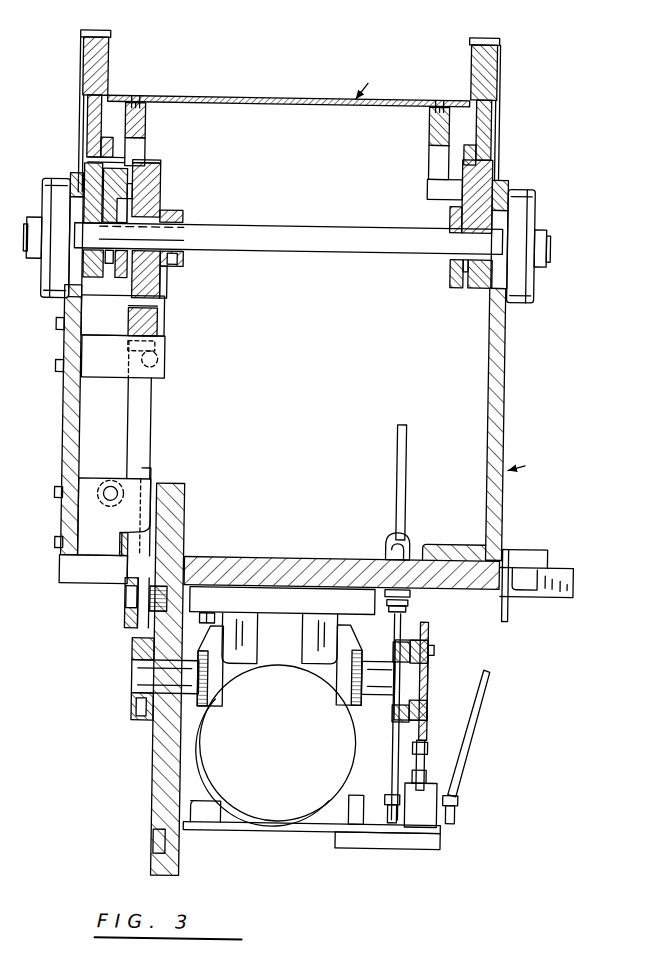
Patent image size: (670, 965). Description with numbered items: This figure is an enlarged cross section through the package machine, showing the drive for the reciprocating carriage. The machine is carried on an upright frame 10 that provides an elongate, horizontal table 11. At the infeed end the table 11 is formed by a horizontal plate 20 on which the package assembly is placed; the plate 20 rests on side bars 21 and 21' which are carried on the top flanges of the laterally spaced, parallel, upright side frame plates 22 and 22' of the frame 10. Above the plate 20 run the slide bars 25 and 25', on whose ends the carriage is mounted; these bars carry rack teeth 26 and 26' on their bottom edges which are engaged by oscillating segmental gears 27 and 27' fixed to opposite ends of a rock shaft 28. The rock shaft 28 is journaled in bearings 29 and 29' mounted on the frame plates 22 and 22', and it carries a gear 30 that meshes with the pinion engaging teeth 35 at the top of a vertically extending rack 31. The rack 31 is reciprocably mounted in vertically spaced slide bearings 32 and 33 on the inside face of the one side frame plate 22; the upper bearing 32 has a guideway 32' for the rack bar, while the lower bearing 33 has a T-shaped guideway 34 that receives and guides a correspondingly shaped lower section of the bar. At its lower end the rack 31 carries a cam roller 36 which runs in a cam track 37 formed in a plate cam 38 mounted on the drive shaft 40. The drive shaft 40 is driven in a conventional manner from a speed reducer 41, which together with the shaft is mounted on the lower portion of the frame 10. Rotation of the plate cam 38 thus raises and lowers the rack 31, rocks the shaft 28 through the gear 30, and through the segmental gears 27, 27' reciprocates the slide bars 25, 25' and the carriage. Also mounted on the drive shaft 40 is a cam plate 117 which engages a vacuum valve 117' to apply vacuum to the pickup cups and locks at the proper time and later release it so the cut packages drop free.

The frame 10 is at (530, 461).
The table 11 is at (375, 81).
The plate 20 is at (392, 102).
The side bar 21 is at (157, 135).
The side bar 21' is at (428, 153).
The side frame plate 22 is at (83, 419).
The side frame plate 22' is at (464, 424).
The slide bar 25 is at (115, 63).
The slide bar 25' is at (464, 68).
The rack teeth 26 is at (52, 114).
The rack teeth 26' is at (525, 113).
The segmental gear 27 is at (73, 159).
The segmental gear 27' is at (499, 167).
The rock shaft 28 is at (300, 237).
The bearing 29 is at (46, 254).
The bearing 29' is at (528, 262).
The gear 30 is at (150, 188).
The rack 31 is at (146, 404).
The slide bearing 32 is at (145, 316).
The guideway 32' is at (168, 356).
The slide bearing 33 is at (116, 563).
The T-shaped guideway 34 is at (150, 521).
The pinion engaging teeth 35 is at (129, 323).
The cam roller 36 is at (188, 561).
The cam track 37 is at (163, 597).
The plate cam 38 is at (166, 730).
The drive shaft 40 is at (155, 679).
The speed reducer 41 is at (343, 767).
The cam plate 117 is at (434, 706).
The vacuum valve 117' is at (457, 796).